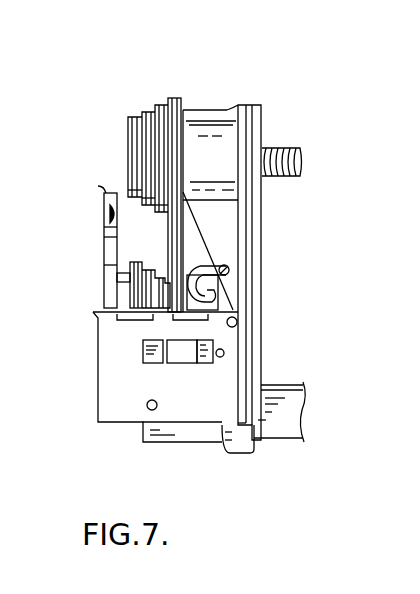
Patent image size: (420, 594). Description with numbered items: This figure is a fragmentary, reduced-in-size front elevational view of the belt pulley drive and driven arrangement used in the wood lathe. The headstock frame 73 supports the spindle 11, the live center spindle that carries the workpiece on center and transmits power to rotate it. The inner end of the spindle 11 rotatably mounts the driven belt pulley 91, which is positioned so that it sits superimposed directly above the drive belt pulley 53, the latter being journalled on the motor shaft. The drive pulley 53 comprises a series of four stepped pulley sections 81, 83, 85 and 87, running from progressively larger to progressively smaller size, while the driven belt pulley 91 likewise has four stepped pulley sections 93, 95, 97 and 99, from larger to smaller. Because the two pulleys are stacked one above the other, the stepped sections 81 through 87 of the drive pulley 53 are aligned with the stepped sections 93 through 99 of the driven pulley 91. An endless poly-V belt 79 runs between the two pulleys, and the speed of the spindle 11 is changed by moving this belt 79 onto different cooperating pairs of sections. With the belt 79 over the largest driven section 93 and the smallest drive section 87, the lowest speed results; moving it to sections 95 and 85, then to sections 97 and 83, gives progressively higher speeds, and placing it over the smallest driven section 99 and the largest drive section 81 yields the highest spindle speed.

The spindle 11 is at (288, 146).
The belt pulley 53 is at (148, 250).
The headstock frame 73 is at (252, 262).
The endless poly-V belt 79 is at (184, 232).
The stepped pulley section 81 is at (128, 279).
The stepped pulley section 83 is at (158, 270).
The stepped pulley section 85 is at (165, 290).
The stepped pulley section 87 is at (168, 318).
The driven belt pulley 91 is at (180, 82).
The stepped pulley section 93 is at (183, 96).
The stepped pulley section 95 is at (158, 105).
The stepped pulley section 97 is at (145, 112).
The stepped pulley section 99 is at (133, 117).